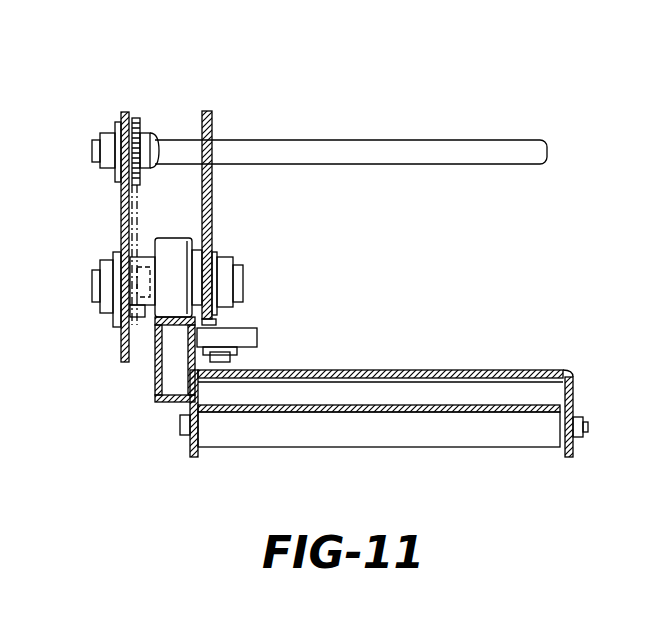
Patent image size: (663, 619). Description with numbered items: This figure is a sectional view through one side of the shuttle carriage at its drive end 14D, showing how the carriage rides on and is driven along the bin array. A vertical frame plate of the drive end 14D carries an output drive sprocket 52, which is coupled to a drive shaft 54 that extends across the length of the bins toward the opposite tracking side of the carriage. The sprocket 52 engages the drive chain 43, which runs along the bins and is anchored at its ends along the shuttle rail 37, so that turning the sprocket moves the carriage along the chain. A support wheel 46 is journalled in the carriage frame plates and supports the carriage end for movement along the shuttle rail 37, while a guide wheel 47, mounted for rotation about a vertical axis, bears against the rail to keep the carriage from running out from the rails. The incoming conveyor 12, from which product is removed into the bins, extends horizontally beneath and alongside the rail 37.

The drive end 14D is at (118, 213).
The output drive sprocket 52 is at (138, 122).
The drive shaft 54 is at (445, 150).
The drive chain 43 is at (137, 233).
The support wheel 46 is at (208, 235).
The guide wheel 47 is at (245, 345).
The shuttle rail 37 is at (158, 400).
The incoming conveyor 12 is at (433, 370).